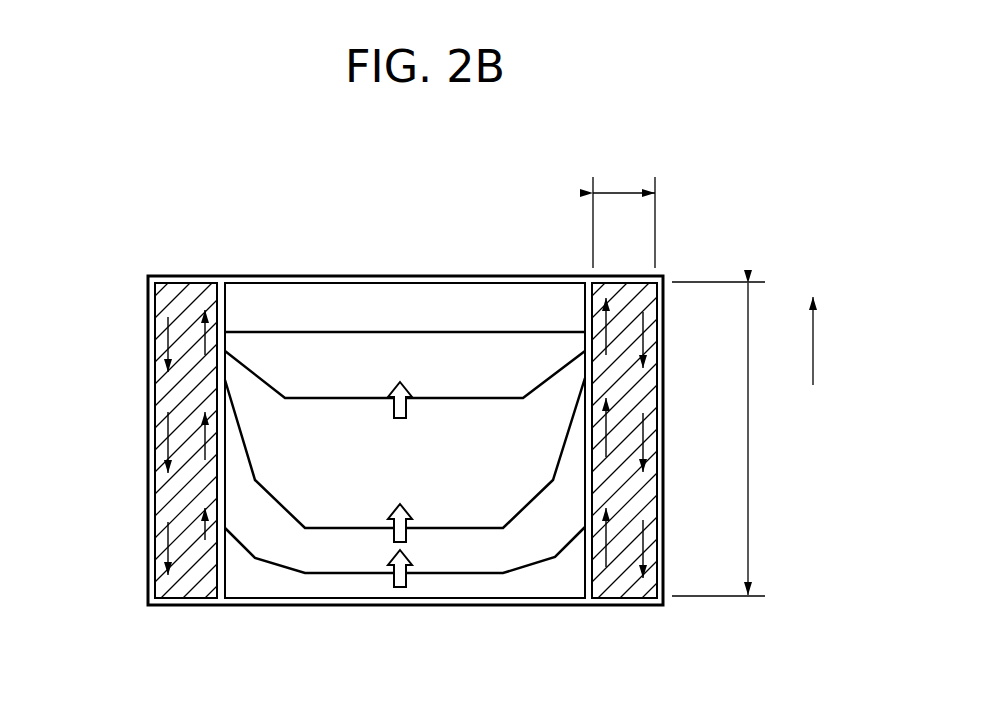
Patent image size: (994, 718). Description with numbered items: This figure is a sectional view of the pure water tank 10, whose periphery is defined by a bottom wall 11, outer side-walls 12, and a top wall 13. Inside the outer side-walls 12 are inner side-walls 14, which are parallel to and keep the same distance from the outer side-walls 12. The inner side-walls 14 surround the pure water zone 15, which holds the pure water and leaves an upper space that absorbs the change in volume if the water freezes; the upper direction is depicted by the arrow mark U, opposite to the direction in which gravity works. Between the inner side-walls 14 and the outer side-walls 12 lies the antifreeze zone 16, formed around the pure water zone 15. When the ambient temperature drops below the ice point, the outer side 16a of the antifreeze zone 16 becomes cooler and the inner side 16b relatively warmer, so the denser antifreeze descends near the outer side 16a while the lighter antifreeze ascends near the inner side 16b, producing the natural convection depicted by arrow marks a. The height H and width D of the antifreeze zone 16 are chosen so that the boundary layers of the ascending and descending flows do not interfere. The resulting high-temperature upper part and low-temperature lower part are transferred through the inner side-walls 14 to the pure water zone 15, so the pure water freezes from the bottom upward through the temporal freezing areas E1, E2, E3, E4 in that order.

The pure water tank 10 is at (150, 217).
The bottom wall 11 is at (377, 602).
The outer side-walls 12 is at (153, 502).
The top wall 13 is at (435, 278).
The inner side-walls 14 is at (242, 290).
The pure water zone 15 is at (353, 295).
The antifreeze zone 16 is at (185, 290).
The outer side of the antifreeze zone 16a is at (154, 412).
The inner side of the antifreeze zone 16b is at (215, 590).
The arrow marks of natural convection a is at (165, 323).
The temporal freezing area E1 is at (443, 578).
The temporal freezing area E2 is at (405, 550).
The temporal freezing area E3 is at (405, 460).
The temporal freezing area E4 is at (405, 384).
The width of the antifreeze zone D is at (624, 209).
The height of the antifreeze zone H is at (725, 439).
The arrow mark U is at (829, 341).